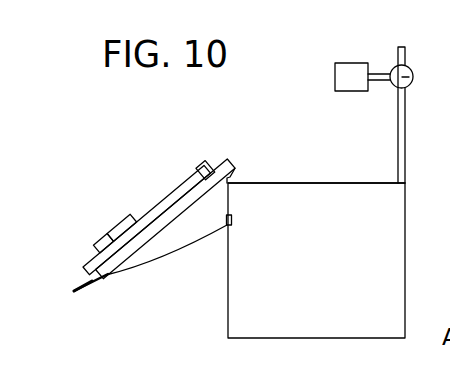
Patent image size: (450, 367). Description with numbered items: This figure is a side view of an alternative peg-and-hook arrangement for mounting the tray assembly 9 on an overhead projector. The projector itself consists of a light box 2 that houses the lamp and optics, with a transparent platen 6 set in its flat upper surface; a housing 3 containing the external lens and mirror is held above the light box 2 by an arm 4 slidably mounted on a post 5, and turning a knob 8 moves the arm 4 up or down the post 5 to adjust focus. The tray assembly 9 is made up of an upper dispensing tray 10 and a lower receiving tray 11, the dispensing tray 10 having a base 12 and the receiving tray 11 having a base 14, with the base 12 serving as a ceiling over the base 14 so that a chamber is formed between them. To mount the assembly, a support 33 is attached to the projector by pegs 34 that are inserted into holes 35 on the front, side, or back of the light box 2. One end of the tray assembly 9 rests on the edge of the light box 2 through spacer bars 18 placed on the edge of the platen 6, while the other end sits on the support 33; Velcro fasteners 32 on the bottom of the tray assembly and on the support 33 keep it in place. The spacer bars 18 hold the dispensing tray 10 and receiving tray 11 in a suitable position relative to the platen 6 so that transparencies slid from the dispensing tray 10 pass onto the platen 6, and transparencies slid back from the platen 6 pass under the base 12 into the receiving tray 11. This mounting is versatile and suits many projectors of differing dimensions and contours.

The light box 2 is at (320, 288).
The housing 3 is at (350, 77).
The arm 4 is at (382, 75).
The post 5 is at (405, 114).
The platen 6 is at (331, 182).
The knob 8 is at (413, 77).
The tray assembly 9 is at (65, 105).
The dispensing tray 10 is at (158, 205).
The receiving tray 11 is at (194, 199).
The base 12 is at (102, 240).
The base 14 is at (121, 222).
The spacer bars 18 is at (230, 163).
The Velcro fasteners 32 is at (82, 283).
The support 33 is at (160, 254).
The pegs 34 is at (232, 220).
The holes 35 is at (227, 227).